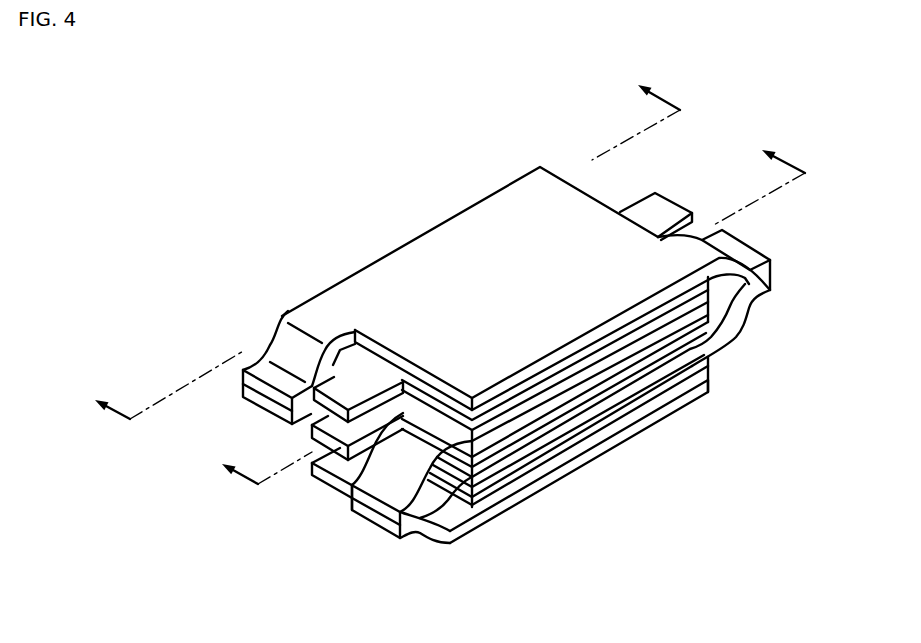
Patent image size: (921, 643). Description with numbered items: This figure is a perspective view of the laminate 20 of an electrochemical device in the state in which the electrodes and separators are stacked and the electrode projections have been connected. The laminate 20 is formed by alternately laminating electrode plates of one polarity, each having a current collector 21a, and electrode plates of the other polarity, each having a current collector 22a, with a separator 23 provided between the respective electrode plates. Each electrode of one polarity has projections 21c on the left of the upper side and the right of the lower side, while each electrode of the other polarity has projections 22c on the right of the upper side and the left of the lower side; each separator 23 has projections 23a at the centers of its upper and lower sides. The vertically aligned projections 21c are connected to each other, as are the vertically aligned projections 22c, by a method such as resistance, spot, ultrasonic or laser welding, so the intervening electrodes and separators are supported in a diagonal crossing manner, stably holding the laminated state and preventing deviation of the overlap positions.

The laminate 20 is at (426, 178).
The current collector 21a is at (497, 440).
The projections 21c is at (400, 470).
The current collector 22a is at (395, 275).
The projections 22c is at (290, 345).
The separator 23 is at (587, 360).
The projections 23a is at (679, 212).